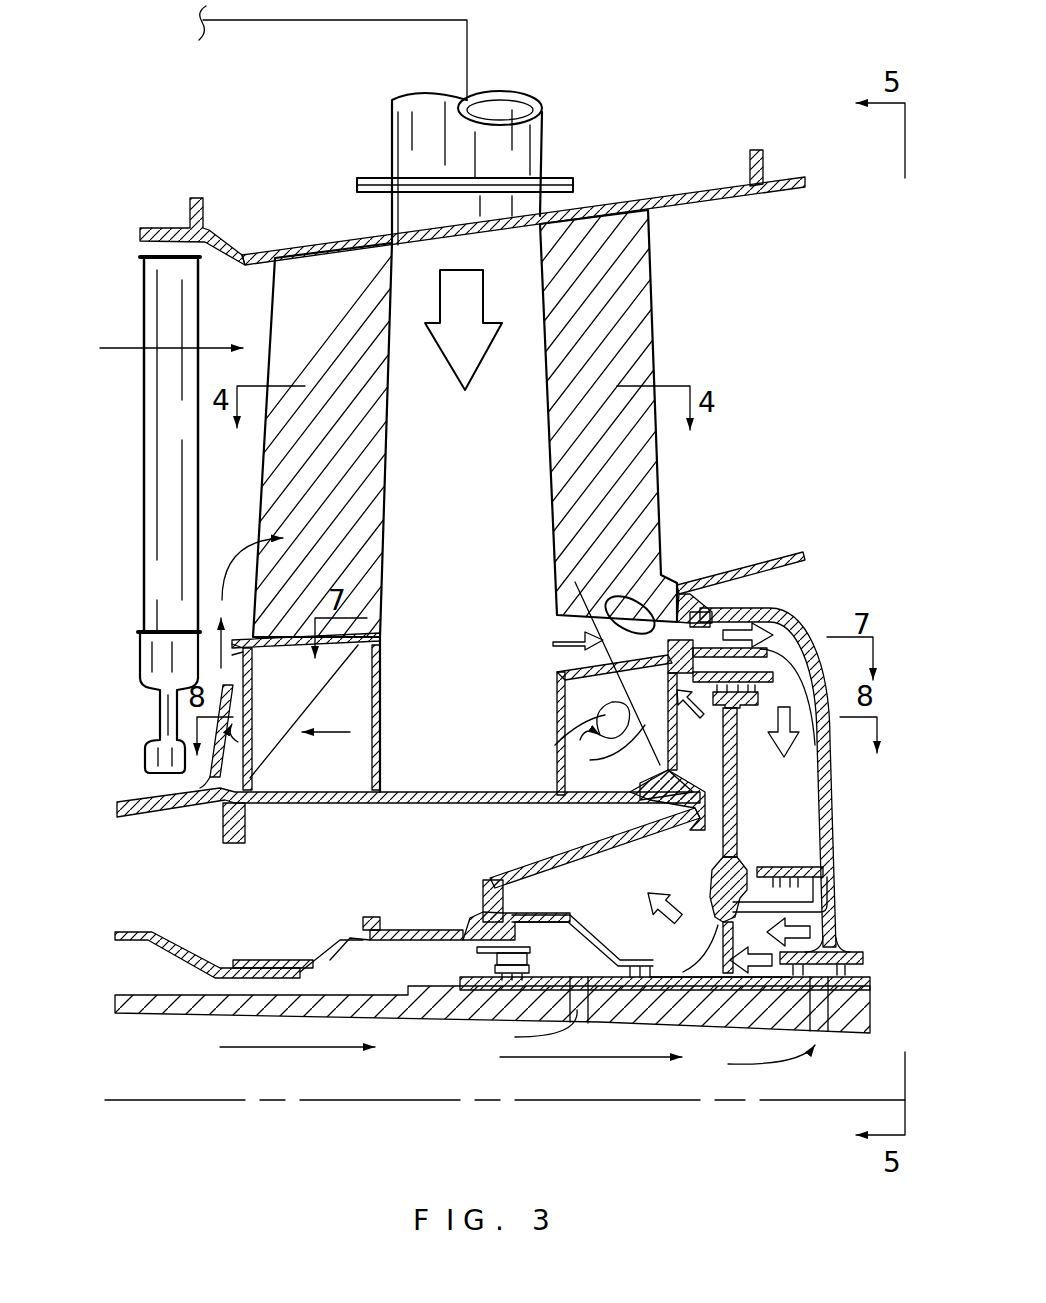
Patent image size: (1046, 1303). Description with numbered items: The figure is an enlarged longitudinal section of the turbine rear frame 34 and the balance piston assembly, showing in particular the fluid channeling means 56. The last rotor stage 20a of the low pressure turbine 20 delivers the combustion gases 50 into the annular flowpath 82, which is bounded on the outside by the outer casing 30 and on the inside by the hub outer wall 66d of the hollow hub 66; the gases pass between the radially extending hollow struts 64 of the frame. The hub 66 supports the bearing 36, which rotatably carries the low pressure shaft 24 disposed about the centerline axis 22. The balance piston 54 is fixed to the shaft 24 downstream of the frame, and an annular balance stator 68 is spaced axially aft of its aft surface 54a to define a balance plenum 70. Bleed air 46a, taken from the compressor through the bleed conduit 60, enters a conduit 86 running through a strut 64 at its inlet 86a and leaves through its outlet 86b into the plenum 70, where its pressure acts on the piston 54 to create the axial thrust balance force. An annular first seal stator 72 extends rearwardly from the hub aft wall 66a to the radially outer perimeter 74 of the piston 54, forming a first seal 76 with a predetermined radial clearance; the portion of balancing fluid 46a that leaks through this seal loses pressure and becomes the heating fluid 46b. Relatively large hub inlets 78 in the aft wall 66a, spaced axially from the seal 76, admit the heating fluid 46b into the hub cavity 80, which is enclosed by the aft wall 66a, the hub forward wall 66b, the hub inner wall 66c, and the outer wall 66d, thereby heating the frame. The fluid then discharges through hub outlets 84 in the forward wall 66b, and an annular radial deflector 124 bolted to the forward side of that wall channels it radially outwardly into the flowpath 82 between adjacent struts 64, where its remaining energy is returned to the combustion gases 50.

The low pressure power turbine 20 is at (150, 224).
The last rotor stage 20a is at (140, 492).
The centerline axis 22 is at (240, 1103).
The low pressure shaft 24 is at (178, 1015).
The outer casing 30 is at (688, 187).
The turbine rear frame 34 is at (666, 512).
The bearing 36 is at (490, 968).
The bleed air 46a is at (460, 386).
The heating fluid 46b is at (590, 755).
The combustion gases 50 is at (117, 350).
The balance piston 54 is at (706, 890).
The aft surface 54a is at (740, 837).
The fluid channeling means 56 is at (563, 104).
The bleed conduit 60 is at (298, 27).
The struts 64 is at (655, 352).
The hub 66 is at (296, 808).
The hub aft wall 66a is at (712, 790).
The hub forward wall 66b is at (256, 775).
The hub inner wall 66c is at (522, 807).
The hub outer wall 66d is at (381, 657).
The balance stator 68 is at (838, 808).
The balance plenum 70 is at (815, 824).
The first seal stator 72 is at (797, 632).
The radially outer perimeter 74 is at (743, 708).
The first seal 76 is at (765, 688).
The hub inlets 78 is at (600, 743).
The hub cavity 80 is at (585, 700).
The annular flowpath 82 is at (828, 385).
The hub outlets 84 is at (248, 732).
The conduit 86 is at (390, 432).
The conduit inlet 86a is at (543, 142).
The conduit outlet 86b is at (615, 603).
The radial deflector 124 is at (190, 778).